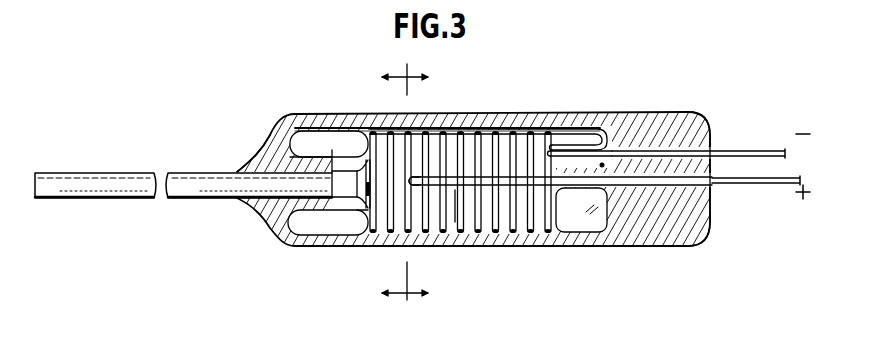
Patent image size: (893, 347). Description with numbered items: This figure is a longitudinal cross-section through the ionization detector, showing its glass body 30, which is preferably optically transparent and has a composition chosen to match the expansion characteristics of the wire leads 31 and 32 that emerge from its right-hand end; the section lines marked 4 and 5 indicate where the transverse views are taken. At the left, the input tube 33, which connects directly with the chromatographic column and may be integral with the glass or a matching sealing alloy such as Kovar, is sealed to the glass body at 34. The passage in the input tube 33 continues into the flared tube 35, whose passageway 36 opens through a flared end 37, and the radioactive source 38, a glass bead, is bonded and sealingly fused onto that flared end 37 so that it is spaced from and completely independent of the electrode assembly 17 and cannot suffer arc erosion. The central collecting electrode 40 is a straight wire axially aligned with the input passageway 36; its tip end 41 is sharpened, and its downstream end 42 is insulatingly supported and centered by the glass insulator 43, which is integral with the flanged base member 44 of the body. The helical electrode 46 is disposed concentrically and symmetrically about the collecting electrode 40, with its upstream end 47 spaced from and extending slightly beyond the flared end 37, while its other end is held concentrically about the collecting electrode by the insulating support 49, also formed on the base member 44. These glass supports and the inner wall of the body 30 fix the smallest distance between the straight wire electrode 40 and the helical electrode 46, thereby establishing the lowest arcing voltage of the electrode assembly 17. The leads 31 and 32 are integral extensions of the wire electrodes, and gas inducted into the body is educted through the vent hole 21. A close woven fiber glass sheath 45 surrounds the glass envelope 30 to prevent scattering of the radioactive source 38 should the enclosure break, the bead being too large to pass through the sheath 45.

The electrode assembly 17 is at (455, 218).
The vent hole 21 is at (611, 160).
The body 30 is at (549, 113).
The wire lead 31 is at (758, 148).
The wire lead 32 is at (770, 184).
The input tube 33 is at (200, 173).
The seal 34 is at (255, 163).
The flared tube 35 is at (293, 145).
The passageway 36 is at (338, 176).
The flared end 37 is at (372, 180).
The radioactive source 38 is at (336, 216).
The central collecting electrode 40 is at (487, 214).
The tip end 41 is at (420, 187).
The downstream end 42 is at (575, 214).
The glass insulator 43 is at (577, 212).
The flanged base member 44 is at (679, 222).
The fiber glass sheath 45 is at (521, 247).
The helical electrode 46 is at (462, 131).
The upstream end 47 is at (356, 222).
The insulating support 49 is at (581, 140).
The section line 4- 4 is at (397, 184).
The section line 5- 5 is at (441, 185).